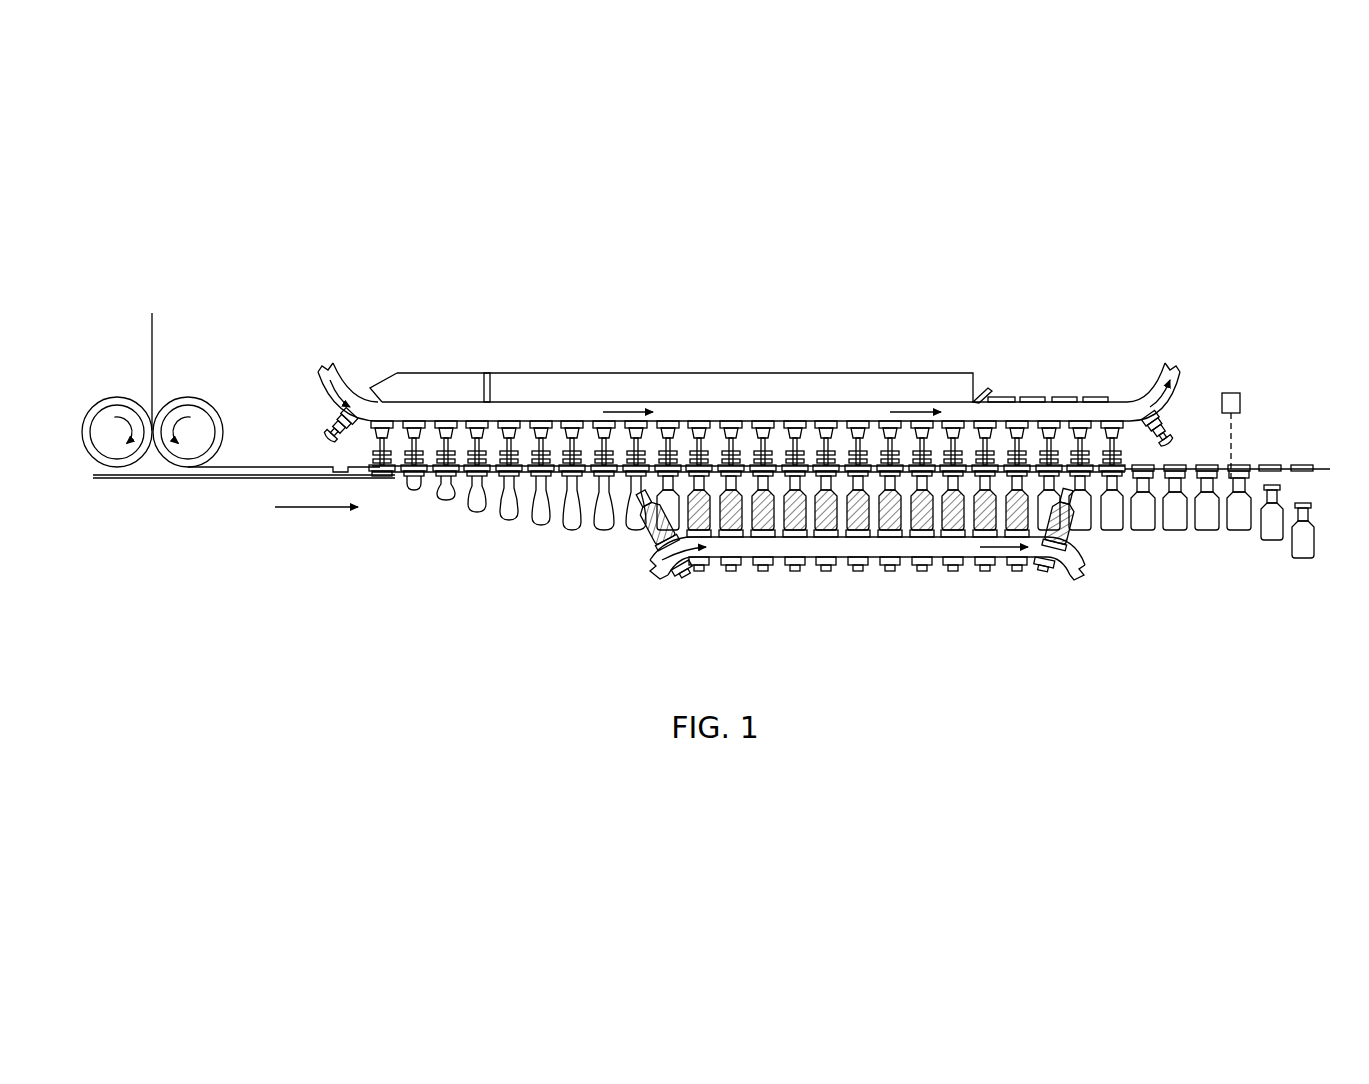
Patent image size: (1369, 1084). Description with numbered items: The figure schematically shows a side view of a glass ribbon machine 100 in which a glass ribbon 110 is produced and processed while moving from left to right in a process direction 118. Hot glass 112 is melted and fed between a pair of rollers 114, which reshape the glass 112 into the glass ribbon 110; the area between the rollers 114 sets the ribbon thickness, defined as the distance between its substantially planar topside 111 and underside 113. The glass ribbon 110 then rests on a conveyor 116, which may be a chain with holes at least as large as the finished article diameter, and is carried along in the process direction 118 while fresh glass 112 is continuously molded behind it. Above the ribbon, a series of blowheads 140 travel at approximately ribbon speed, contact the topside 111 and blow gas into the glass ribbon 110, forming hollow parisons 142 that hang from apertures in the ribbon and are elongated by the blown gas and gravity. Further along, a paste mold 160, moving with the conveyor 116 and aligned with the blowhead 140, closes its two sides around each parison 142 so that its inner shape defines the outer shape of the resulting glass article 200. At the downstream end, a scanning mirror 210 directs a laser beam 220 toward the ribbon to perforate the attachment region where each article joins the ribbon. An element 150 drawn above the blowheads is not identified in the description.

The glass ribbon machine 100 is at (848, 326).
The glass ribbon 110 is at (258, 466).
The topside 111 is at (299, 466).
The glass 112 is at (153, 331).
The underside 113 is at (259, 479).
The rollers 114 is at (116, 397).
The conveyor 116 is at (204, 479).
The process direction 118 is at (314, 510).
The blowhead 140 is at (326, 420).
The parison 142 is at (516, 523).
The forming unit 150 is at (600, 372).
The paste mold 160 is at (733, 522).
The glass article 200 is at (1144, 532).
The scanning mirror 210 is at (1233, 392).
The laser beam 220 is at (1233, 432).